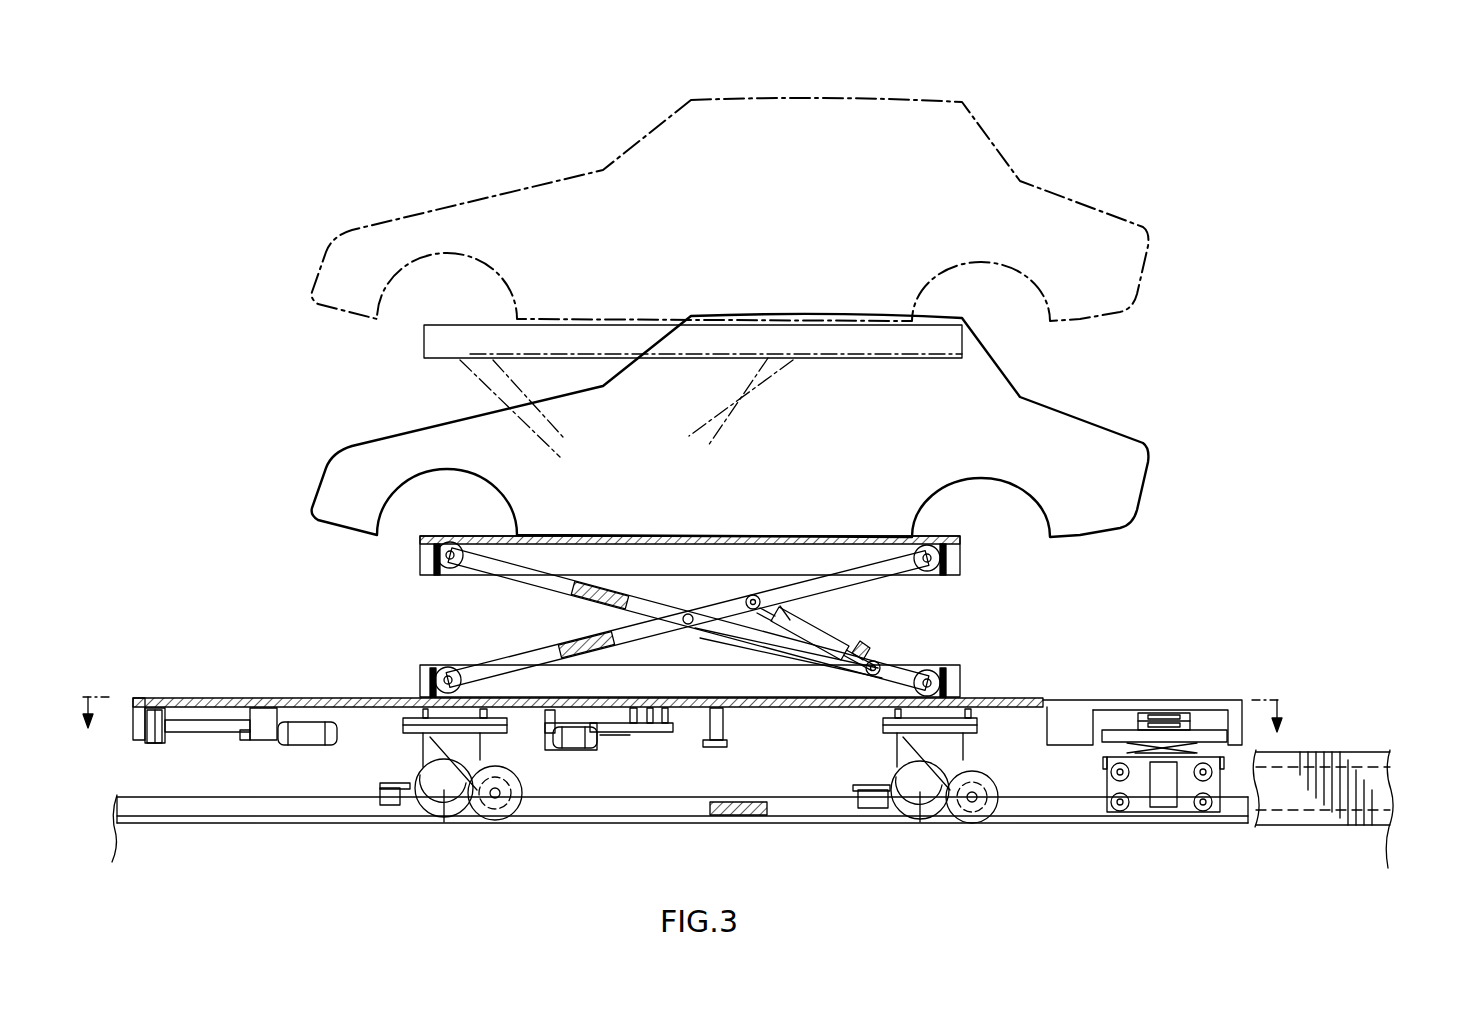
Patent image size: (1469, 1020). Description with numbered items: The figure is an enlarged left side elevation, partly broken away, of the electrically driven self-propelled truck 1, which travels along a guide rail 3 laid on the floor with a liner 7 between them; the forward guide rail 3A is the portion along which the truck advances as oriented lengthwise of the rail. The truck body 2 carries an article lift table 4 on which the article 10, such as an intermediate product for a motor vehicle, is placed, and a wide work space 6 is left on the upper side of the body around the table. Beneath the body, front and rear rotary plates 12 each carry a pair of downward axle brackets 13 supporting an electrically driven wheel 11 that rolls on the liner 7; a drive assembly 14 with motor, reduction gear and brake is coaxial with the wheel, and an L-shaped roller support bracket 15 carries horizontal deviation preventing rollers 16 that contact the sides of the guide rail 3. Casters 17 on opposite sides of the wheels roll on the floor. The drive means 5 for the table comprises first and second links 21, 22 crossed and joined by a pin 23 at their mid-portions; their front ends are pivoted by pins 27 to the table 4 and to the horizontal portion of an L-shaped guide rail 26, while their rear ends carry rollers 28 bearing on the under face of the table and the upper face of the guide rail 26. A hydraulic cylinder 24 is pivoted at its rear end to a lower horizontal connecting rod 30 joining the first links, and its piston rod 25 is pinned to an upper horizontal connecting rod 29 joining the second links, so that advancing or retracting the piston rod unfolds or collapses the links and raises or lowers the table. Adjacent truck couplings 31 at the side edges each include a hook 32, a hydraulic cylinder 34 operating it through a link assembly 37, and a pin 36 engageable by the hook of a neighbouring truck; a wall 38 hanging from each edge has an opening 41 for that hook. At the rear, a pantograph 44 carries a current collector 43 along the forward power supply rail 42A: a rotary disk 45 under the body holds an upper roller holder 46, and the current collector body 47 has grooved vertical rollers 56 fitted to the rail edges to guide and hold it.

The self-propelled truck 1 is at (1163, 600).
The truck body 2 is at (687, 677).
The guide rail 3 is at (680, 834).
The forward guide rail 3A is at (640, 805).
The article lift table 4 is at (462, 320).
The drive means 5 is at (687, 594).
The work space 6 is at (300, 697).
The liner 7 is at (724, 805).
The article 10 is at (545, 183).
The electrically driven wheel 11 is at (430, 806).
The rotary plate 12 is at (403, 726).
The axle bracket 13 is at (423, 755).
The drive assembly 14 is at (448, 800).
The roller support bracket 15 is at (385, 786).
The horizontal deviation preventing roller 16 is at (388, 806).
The caster 17 is at (497, 818).
The first link 21 is at (512, 579).
The second link 22 is at (505, 656).
The pin 23 is at (686, 612).
The hydraulic cylinder 24 is at (815, 636).
The piston rod 25 is at (782, 592).
The guide rail 26 is at (428, 668).
The pin 27 is at (436, 557).
The roller 28 is at (945, 558).
The upper horizontal connecting rod 29 is at (753, 594).
The lower horizontal connecting rod 30 is at (883, 660).
The adjacent truck coupling 31 is at (460, 718).
The hook 32 is at (210, 733).
The hydraulic cylinder 34 is at (302, 747).
The pin 36 is at (160, 742).
The link assembly 37 is at (258, 742).
The wall 38 is at (143, 745).
The opening 41 is at (133, 710).
The forward power supply rail 42A is at (1370, 790).
The current collector 43 is at (1160, 808).
The pantograph 44 is at (1175, 765).
The rotary disk 45 is at (1190, 715).
The upper roller holder 46 is at (1125, 730).
The current collector body 47 is at (1195, 815).
The vertical roller 56 is at (1122, 812).